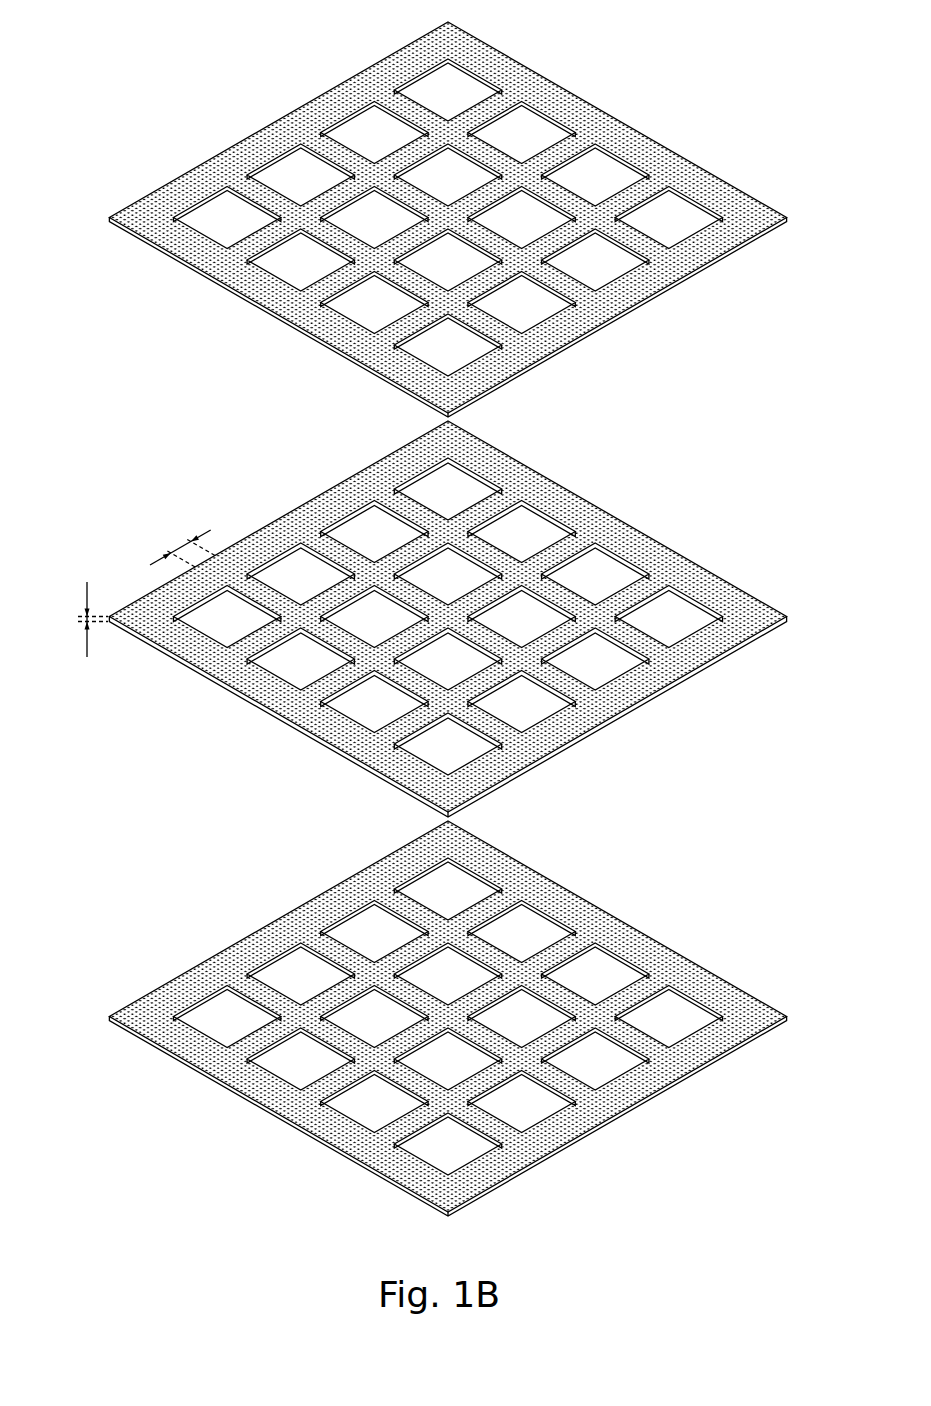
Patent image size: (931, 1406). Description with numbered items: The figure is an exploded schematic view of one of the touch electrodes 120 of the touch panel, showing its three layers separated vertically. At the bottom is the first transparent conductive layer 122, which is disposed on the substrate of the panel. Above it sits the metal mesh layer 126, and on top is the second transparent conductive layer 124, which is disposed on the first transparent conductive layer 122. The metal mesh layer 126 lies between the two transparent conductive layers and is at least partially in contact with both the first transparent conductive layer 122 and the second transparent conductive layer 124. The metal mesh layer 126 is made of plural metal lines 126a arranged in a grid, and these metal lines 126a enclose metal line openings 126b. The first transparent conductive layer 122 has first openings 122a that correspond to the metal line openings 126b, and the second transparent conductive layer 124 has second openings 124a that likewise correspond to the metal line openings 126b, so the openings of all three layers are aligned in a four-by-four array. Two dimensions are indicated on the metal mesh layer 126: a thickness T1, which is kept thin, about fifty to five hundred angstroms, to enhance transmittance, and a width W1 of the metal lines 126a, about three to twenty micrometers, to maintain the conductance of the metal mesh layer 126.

The touch electrode 120 is at (180, 35).
The first transparent conductive layer 122 is at (454, 1018).
The first opening 122a is at (630, 951).
The second transparent conductive layer 124 is at (454, 219).
The second opening 124a is at (630, 156).
The metal mesh layer 126 is at (424, 617).
The metal lines 126a is at (480, 507).
The metal line opening 126b is at (630, 550).
The width of the metal lines W1 is at (178, 541).
The thickness of the metal mesh layer T1 is at (77, 619).